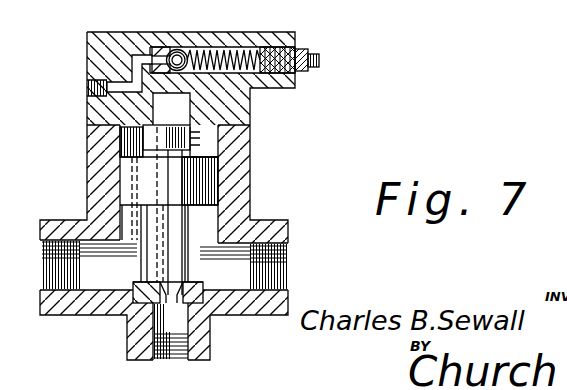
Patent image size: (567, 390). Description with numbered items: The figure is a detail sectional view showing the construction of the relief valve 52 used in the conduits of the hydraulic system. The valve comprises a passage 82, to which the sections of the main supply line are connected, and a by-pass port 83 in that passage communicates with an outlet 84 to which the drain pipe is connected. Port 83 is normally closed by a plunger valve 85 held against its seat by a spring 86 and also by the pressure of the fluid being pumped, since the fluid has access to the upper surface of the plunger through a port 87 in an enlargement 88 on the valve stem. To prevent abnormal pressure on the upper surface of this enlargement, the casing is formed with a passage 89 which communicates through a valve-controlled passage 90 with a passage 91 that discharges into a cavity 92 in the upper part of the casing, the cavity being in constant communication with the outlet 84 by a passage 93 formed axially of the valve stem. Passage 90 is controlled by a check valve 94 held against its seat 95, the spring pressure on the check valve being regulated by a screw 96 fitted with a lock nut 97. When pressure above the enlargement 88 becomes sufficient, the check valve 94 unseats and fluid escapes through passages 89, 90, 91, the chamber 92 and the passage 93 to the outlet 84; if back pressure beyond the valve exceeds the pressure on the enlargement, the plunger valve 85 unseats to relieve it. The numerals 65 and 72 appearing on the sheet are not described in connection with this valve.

The relief valve 52 is at (87, 53).
The reference numeral (adjacent figure) 65 is at (463, 12).
The reference numeral (adjacent figure) 72 is at (382, 11).
The passage 82 is at (93, 283).
The by-pass port 83 is at (185, 310).
The outlet 84 is at (168, 358).
The plunger valve 85 is at (160, 262).
The spring 86 is at (222, 148).
The port 87 is at (120, 173).
The enlargement 88 is at (142, 182).
The passage 89 is at (137, 72).
The valve-controlled passage 90 is at (160, 48).
The passage 91 is at (252, 108).
The cavity 92 is at (250, 123).
The passage 93 is at (173, 220).
The check valve 94 is at (178, 52).
The seat 95 is at (226, 47).
The screw 96 is at (322, 50).
The lock nut 97 is at (306, 72).